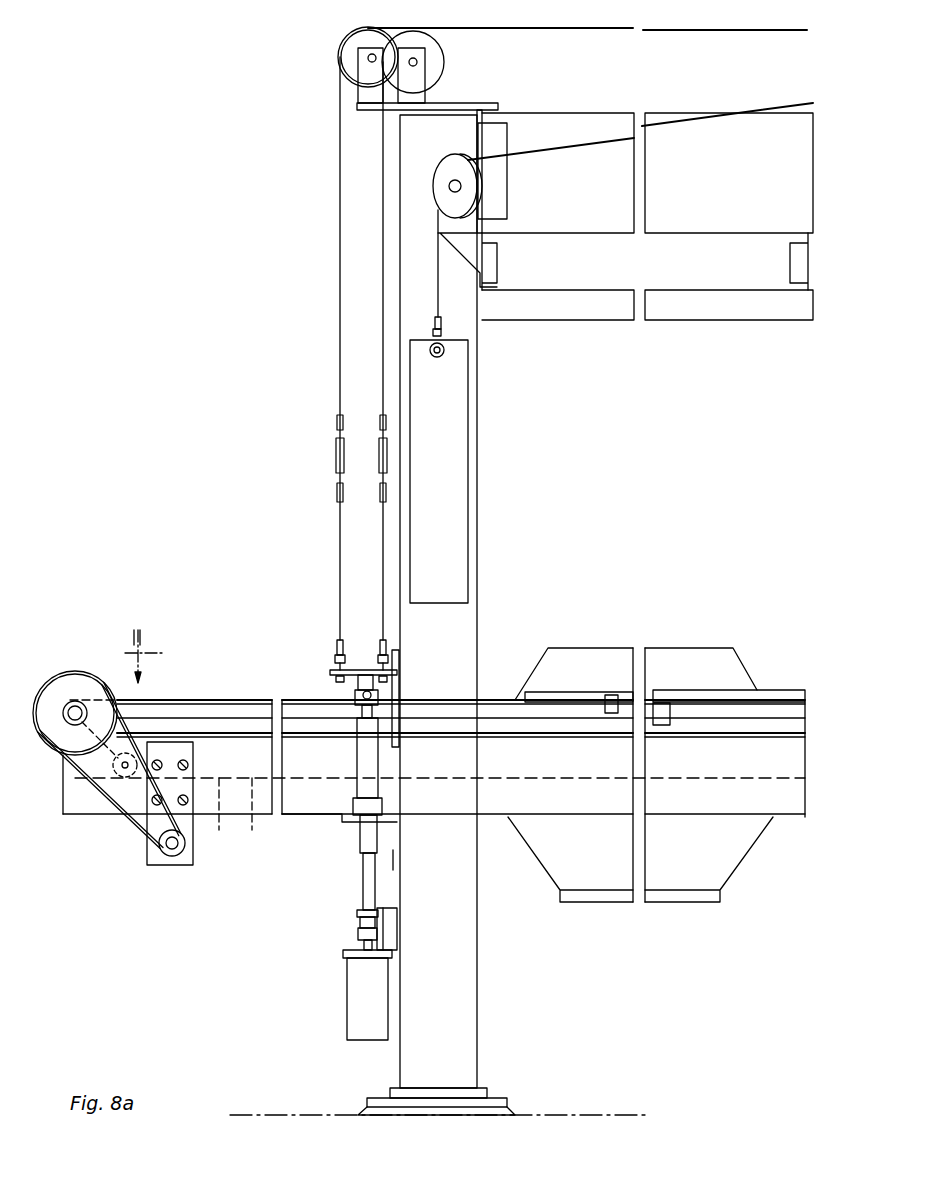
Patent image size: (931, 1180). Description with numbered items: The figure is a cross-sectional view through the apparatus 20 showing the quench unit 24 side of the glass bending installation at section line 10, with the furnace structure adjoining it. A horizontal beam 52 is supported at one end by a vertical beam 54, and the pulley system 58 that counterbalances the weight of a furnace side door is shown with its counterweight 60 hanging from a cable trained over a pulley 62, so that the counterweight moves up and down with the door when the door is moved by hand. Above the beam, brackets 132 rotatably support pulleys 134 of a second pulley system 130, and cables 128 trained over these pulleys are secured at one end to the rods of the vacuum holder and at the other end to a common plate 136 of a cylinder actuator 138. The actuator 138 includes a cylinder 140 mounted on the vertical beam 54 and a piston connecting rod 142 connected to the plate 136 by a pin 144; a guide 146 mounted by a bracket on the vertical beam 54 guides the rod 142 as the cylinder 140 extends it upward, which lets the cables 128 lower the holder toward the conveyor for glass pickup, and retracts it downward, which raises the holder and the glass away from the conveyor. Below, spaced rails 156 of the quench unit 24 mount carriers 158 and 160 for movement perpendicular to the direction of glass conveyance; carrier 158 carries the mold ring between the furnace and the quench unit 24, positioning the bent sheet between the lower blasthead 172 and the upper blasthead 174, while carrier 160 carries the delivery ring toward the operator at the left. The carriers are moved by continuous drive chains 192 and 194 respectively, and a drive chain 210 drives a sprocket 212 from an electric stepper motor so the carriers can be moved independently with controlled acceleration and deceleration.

The conveyor section line 10 is at (154, 653).
The apparatus 20 is at (243, 120).
The quench unit 24 is at (560, 560).
The horizontal beam 52 is at (620, 220).
The vertical beam 54 is at (463, 953).
The pulley system 58 is at (440, 168).
The counterweight 60 is at (458, 580).
The pulley 62 is at (468, 198).
The cable 128 is at (390, 27).
The pulley system 130 is at (343, 43).
The bracket 132 is at (375, 88).
The pulley 134 is at (350, 58).
The common plate 136 is at (345, 668).
The cylinder actuator 138 is at (348, 828).
The cylinder 140 is at (360, 1005).
The piston connecting rod 142 is at (367, 888).
The pin 144 is at (371, 695).
The guide 146 is at (372, 807).
The rail 156 is at (693, 727).
The carrier 158 is at (693, 697).
The carrier 160 is at (568, 697).
The lower blasthead 172 is at (753, 863).
The upper blasthead 174 is at (740, 650).
The drive chain 192 is at (221, 815).
The drive chain 194 is at (260, 810).
The drive chain 210 is at (107, 803).
The sprocket 212 is at (63, 688).